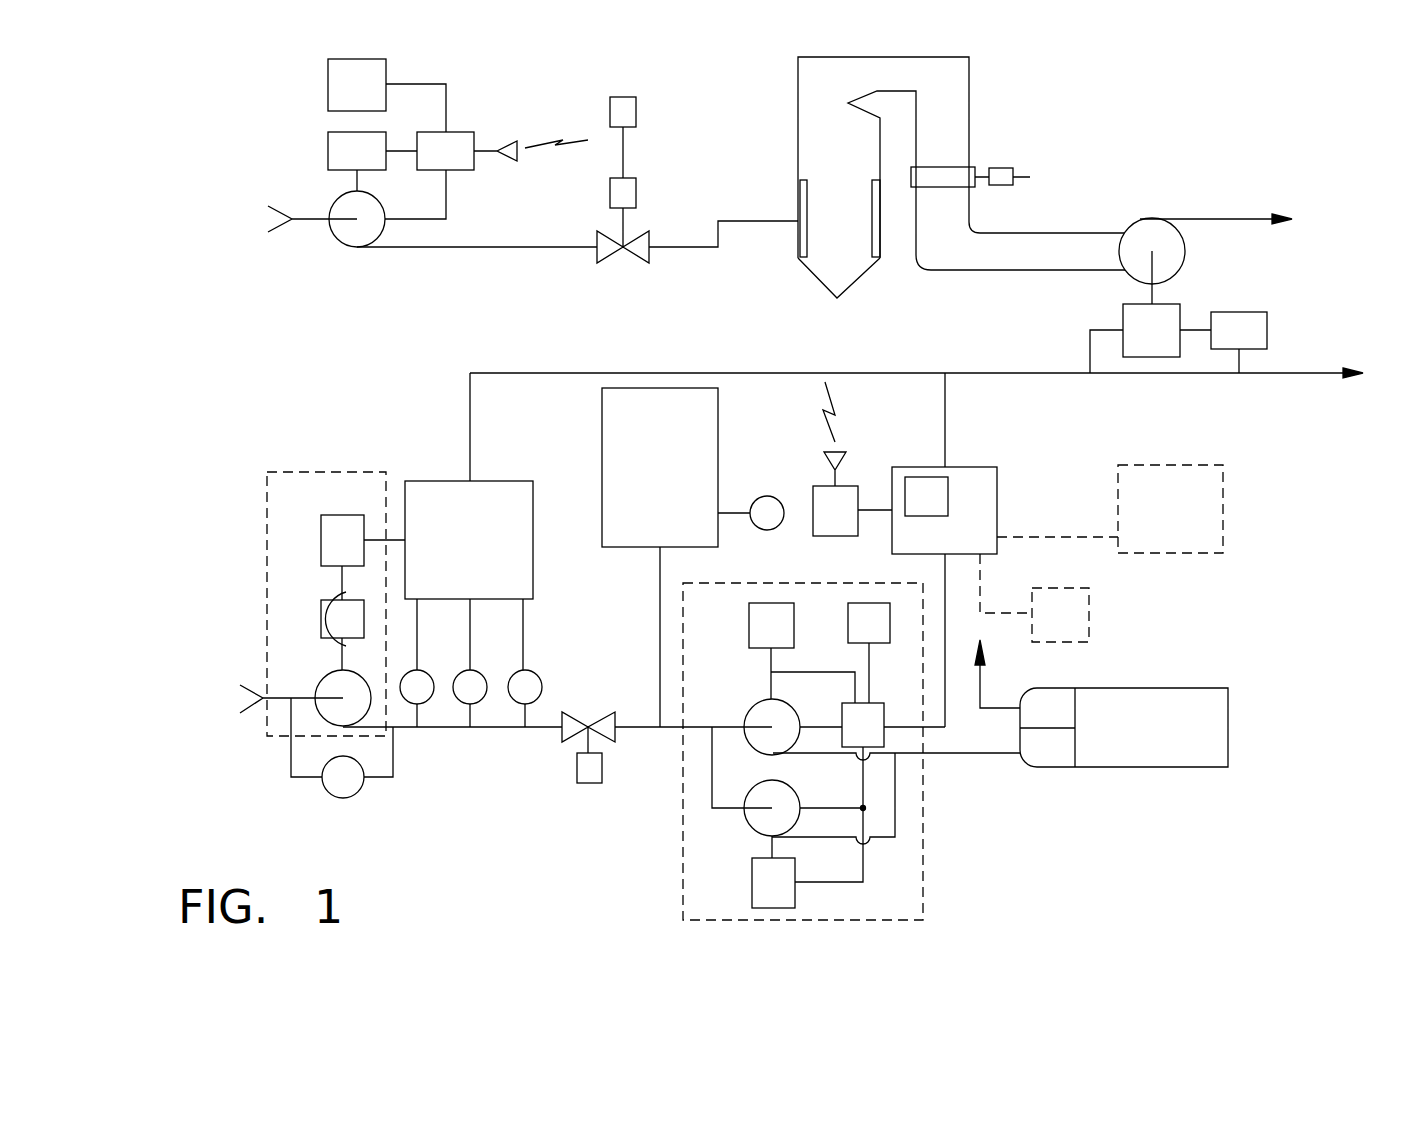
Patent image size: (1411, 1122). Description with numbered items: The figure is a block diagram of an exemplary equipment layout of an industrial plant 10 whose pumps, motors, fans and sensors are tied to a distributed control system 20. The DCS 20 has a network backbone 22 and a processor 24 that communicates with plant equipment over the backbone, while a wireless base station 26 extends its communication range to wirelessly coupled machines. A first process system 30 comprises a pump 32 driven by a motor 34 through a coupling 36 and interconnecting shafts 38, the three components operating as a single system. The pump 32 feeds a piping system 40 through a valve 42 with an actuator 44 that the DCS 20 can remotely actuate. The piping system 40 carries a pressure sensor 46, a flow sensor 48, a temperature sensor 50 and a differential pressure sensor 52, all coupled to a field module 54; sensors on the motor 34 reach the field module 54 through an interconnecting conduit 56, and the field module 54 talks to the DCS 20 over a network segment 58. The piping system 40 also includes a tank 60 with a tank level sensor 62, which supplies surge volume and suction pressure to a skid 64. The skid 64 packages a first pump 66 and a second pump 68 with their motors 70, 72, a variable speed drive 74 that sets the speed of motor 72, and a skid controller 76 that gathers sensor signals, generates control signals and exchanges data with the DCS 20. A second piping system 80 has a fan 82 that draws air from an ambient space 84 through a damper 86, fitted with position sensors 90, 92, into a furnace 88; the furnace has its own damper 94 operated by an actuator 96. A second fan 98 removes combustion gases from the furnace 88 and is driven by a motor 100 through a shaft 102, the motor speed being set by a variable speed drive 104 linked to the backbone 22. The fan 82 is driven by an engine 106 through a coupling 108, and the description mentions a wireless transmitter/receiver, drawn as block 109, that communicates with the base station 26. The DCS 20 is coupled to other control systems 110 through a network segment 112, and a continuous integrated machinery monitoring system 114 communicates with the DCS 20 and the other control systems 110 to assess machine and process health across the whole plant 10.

The industrial plant 10 is at (278, 402).
The distributed control system 20 is at (985, 500).
The network backbone 22 is at (882, 368).
The processor 24 is at (910, 509).
The wireless base station 26 is at (819, 524).
The first process system 30 is at (255, 572).
The pump 32 is at (327, 687).
The motor 34 is at (326, 553).
The coupling 36 is at (326, 632).
The interconnecting shafts 38 is at (316, 619).
The piping system 40 is at (635, 732).
The valve 42 is at (562, 737).
The actuator 44 is at (588, 787).
The pressure sensor 46 is at (477, 660).
The flow sensor 48 is at (424, 660).
The temperature sensor 50 is at (542, 683).
The differential pressure sensor 52 is at (335, 800).
The field module 54 is at (453, 553).
The interconnecting conduit 56 is at (378, 537).
The network segment 58 is at (468, 410).
The tank 60 is at (644, 481).
The tank level sensor 62 is at (767, 530).
The skid 64 is at (660, 876).
The first pump 66 is at (760, 823).
The second pump 68 is at (763, 710).
The motor 70 is at (757, 896).
The motor 72 is at (755, 638).
The variable speed drive 74 is at (853, 636).
The skid controller 76 is at (847, 738).
The second piping system 80 is at (533, 247).
The fan 82 is at (348, 233).
The ambient space 84 is at (243, 230).
The damper 86 is at (648, 257).
The furnace 88 is at (815, 137).
The position sensor 90 is at (637, 110).
The position sensor 92 is at (637, 193).
The furnace damper 94 is at (948, 172).
The actuator 96 is at (1030, 177).
The second fan 98 is at (1143, 228).
The motor 100 is at (1128, 343).
The shaft 102 is at (1153, 298).
The variable speed drive 104 is at (1216, 343).
The engine 106 is at (334, 98).
The coupling 108 is at (334, 164).
The wireless module 109 is at (423, 164).
The other control systems 110 is at (1255, 605).
The network segment 112 is at (1048, 537).
The continuous integrated machinery monitoring system 114 is at (1037, 628).